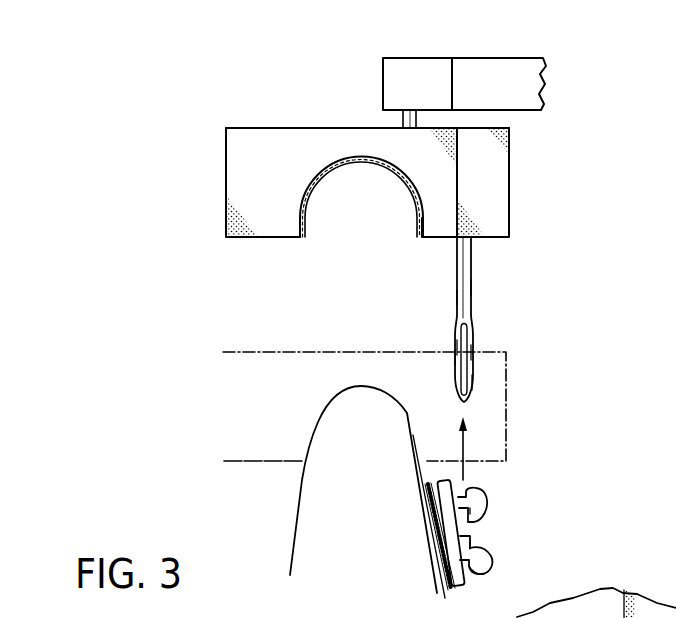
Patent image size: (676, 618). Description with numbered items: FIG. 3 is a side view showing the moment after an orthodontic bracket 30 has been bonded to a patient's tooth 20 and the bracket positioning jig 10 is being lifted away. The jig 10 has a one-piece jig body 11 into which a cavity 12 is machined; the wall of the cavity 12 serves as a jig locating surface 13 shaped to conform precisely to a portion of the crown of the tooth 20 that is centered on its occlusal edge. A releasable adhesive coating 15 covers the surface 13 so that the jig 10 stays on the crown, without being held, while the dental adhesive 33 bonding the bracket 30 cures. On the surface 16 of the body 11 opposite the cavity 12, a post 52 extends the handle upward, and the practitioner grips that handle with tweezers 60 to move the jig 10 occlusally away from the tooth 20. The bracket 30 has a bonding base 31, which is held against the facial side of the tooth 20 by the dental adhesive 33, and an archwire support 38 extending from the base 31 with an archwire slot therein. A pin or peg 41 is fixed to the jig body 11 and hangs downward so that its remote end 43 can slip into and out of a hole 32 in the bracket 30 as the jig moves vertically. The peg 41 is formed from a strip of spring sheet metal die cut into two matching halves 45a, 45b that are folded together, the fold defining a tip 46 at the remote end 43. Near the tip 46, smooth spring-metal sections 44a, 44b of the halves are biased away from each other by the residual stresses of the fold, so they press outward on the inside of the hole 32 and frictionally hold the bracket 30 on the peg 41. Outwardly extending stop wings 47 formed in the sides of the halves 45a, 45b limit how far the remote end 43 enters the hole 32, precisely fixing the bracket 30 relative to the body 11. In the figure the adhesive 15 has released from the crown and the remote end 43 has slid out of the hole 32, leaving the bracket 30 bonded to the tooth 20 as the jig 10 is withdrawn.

The bracket positioning jig 10 is at (230, 337).
The jig body 11 is at (224, 160).
The cavity 12 is at (373, 205).
The jig locating surface 13 is at (312, 200).
The releasable adhesive coating 15 is at (412, 208).
The surface of jig body 16 is at (283, 127).
The tooth 20 is at (297, 521).
The orthodontic bracket 30 is at (501, 503).
The bonding base 31 is at (436, 506).
The hole 32 is at (460, 543).
The dental adhesive 33 is at (432, 483).
The archwire support 38 is at (490, 570).
The pin or peg 41 is at (476, 273).
The remote end 43 is at (477, 385).
The spring metal section 44a is at (455, 358).
The spring metal section 44b is at (470, 356).
The strip half 45a is at (458, 295).
The strip half 45b is at (471, 287).
The tip 46 is at (467, 401).
The stop wings 47 is at (458, 349).
The post 52 is at (402, 122).
The tweezers 60 is at (378, 58).